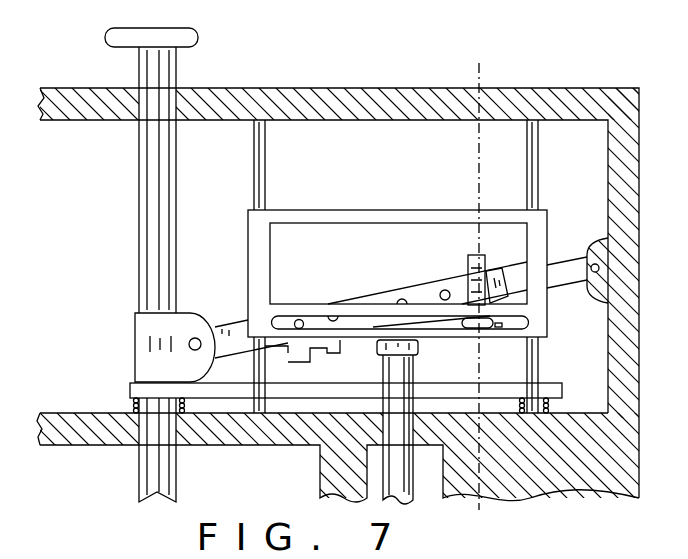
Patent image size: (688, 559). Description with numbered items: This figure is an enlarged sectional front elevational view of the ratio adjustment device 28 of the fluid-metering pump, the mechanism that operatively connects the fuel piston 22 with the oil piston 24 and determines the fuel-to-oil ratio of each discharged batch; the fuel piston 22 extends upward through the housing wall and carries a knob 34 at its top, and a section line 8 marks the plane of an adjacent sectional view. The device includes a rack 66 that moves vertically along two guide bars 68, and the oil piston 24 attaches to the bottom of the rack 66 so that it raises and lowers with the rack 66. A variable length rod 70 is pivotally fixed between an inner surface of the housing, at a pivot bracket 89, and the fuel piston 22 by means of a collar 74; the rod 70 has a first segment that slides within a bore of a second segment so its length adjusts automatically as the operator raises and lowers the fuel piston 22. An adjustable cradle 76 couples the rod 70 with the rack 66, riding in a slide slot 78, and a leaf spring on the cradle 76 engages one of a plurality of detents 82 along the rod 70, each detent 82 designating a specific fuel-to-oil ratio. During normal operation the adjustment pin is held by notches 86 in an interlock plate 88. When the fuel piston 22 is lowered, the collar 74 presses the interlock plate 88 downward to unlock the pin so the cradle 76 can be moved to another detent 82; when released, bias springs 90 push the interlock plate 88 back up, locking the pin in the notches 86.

The section line 8- 8 is at (455, 510).
The fuel piston 22 is at (160, 198).
The oil piston 24 is at (384, 374).
The ratio adjustment device 28 is at (397, 245).
The knob 34 is at (183, 42).
The rack 66 is at (316, 217).
The guide bars 68 is at (538, 170).
The variable length rod 70 is at (568, 270).
The collar 74 is at (135, 343).
The adjustable cradle 76 is at (471, 330).
The slide slot 78 is at (512, 330).
The detents 82 is at (444, 290).
The notches 86 is at (290, 356).
The interlock plate 88 is at (313, 398).
The pivot bracket 89 is at (592, 296).
The bias springs 90 is at (552, 407).